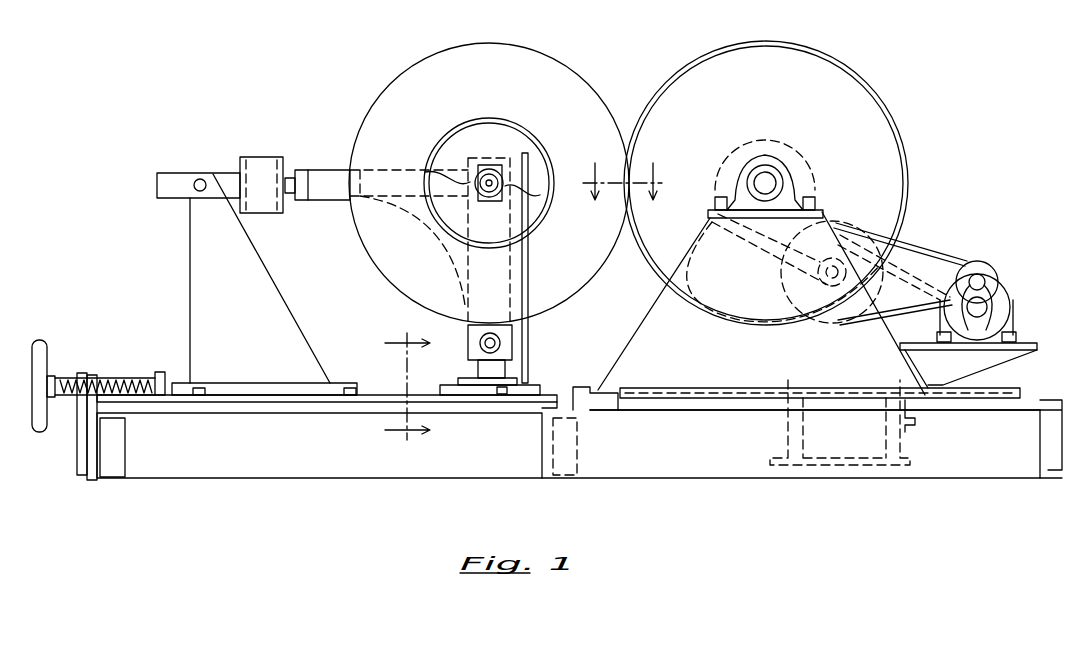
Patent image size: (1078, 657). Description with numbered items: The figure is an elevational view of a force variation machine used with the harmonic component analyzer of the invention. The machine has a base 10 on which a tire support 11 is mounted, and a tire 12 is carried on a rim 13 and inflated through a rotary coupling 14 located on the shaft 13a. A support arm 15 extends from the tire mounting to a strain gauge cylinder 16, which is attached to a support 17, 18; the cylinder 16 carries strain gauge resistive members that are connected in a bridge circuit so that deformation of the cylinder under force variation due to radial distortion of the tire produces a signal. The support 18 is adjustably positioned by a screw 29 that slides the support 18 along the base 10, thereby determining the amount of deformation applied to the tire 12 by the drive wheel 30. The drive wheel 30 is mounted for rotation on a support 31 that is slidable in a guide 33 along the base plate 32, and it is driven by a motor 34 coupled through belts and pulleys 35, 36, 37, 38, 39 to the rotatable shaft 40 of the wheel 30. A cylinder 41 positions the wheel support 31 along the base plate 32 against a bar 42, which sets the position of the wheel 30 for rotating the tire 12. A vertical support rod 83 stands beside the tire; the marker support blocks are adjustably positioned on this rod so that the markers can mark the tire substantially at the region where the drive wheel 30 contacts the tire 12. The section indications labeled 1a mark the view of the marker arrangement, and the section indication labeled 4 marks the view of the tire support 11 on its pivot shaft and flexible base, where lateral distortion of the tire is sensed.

The base 10 is at (612, 478).
The tire support 11 is at (512, 335).
The tire 12 is at (578, 56).
The rim 13 is at (542, 212).
The shaft 13a is at (489, 168).
The rotary coupling 14 is at (489, 198).
The support arm 15 is at (320, 170).
The strain gauge cylinder 16 is at (265, 157).
The support 17 is at (165, 172).
The support 18 is at (190, 262).
The screw 29 is at (40, 342).
The drive wheel 30 is at (804, 52).
The support 31 is at (645, 330).
The base plate 32 is at (707, 410).
The guide 33 is at (683, 398).
The motor 34 is at (1008, 292).
The belt 35 is at (936, 255).
The pulley 36 is at (882, 282).
The pulley 37 is at (832, 262).
The belt 38 is at (762, 255).
The pulley 39 is at (800, 140).
The rotatable shaft 40 is at (780, 178).
The cylinder 41 is at (910, 432).
The bar 42 is at (583, 385).
The vertical support rod 83 is at (528, 268).
The section line 1a is at (622, 171).
The section line 4 is at (376, 353).